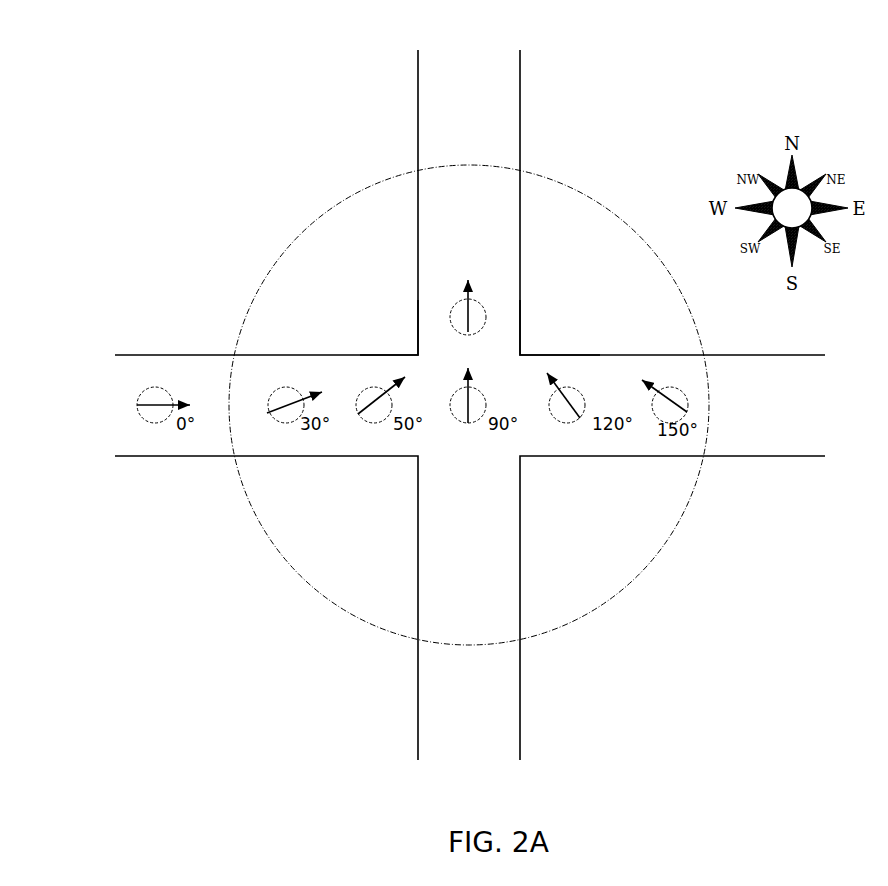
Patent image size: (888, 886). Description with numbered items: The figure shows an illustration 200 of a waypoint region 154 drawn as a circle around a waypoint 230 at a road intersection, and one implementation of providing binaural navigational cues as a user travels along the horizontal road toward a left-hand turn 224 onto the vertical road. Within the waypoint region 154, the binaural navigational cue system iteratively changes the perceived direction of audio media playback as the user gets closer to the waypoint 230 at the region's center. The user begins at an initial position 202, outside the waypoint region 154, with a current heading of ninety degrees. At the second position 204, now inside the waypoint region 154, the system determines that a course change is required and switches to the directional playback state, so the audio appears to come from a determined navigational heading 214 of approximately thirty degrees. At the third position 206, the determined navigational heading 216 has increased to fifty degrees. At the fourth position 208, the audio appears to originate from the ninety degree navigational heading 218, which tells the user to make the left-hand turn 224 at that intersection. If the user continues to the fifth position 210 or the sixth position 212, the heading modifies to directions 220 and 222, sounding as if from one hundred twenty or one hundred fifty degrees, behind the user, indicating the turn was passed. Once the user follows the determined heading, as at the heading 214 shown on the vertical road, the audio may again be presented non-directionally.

The driving scenario / environment 200 is at (72, 142).
The waypoint region 154 is at (588, 196).
The initial position 202 is at (152, 388).
The second position 204 is at (284, 388).
The third position 206 is at (367, 389).
The fourth position 208 is at (474, 388).
The fifth position 210 is at (570, 388).
The sixth position 212 is at (662, 388).
The determined navigational heading of approximately 30 degrees 214 is at (474, 300).
The determined navigational heading of 50 degrees 216 is at (367, 412).
The 90 degree navigational heading 218 is at (473, 424).
The navigational heading direction at fifth position 220 is at (574, 410).
The navigational heading direction at sixth position 222 is at (680, 404).
The left-hand turn 224 is at (502, 340).
The waypoint 230 is at (418, 352).